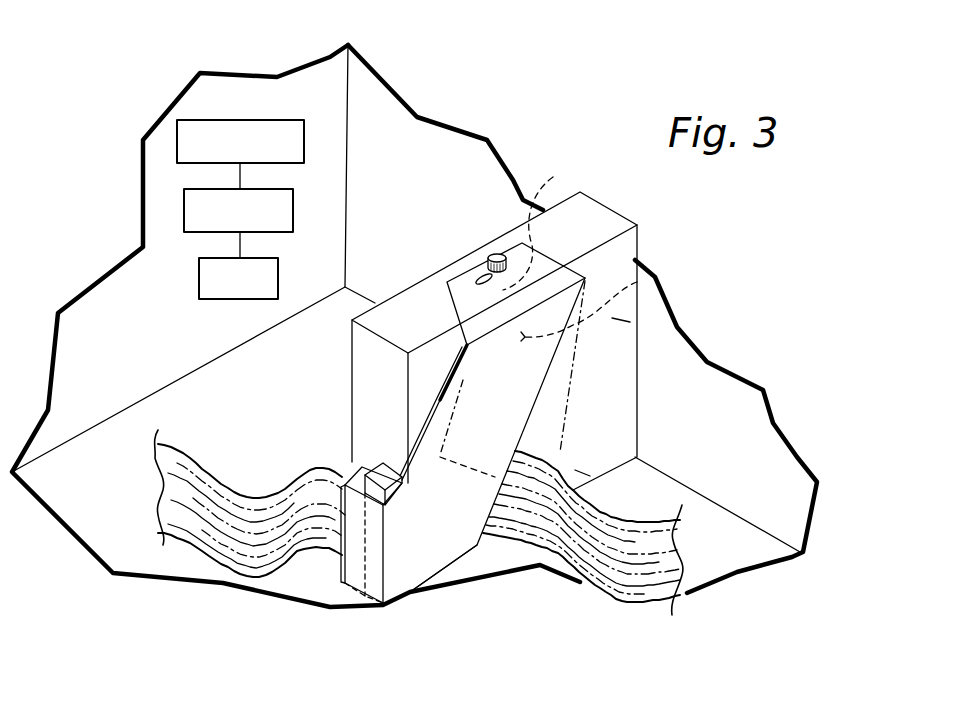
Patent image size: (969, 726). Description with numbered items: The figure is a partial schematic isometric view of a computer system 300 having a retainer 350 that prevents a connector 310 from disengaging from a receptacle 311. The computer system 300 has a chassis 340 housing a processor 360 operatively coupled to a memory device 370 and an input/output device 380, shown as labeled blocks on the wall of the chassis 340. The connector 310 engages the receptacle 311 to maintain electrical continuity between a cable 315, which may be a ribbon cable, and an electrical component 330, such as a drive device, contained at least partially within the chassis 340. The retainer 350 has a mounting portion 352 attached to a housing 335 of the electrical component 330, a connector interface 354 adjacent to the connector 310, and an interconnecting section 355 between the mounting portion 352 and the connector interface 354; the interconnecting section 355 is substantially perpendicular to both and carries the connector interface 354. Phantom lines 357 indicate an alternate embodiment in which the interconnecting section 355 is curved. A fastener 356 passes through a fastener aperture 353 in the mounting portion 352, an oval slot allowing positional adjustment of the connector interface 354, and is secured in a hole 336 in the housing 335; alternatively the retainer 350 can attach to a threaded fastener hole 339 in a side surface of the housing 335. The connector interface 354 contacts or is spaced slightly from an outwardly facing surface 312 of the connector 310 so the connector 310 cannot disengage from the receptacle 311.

The computer system 300 is at (738, 600).
The connector 310 is at (342, 462).
The receptacle 311 is at (383, 463).
The outwardly facing surface 312 is at (343, 582).
The cable 315 is at (610, 597).
The electrical component 330 is at (628, 247).
The housing 335 is at (623, 320).
The hole 336 is at (536, 224).
The threaded fastener hole 339 is at (637, 282).
The chassis 340 is at (702, 377).
The retainer 350 is at (538, 370).
The mounting portion 352 is at (447, 307).
The fastener aperture 353 is at (484, 275).
The connector interface 354 is at (410, 592).
The interconnecting section 355 is at (530, 410).
The fastener 356 is at (496, 254).
The phantom lines 357 is at (582, 472).
The processor 360 is at (177, 145).
The memory device 370 is at (184, 207).
The input/output device 380 is at (198, 283).